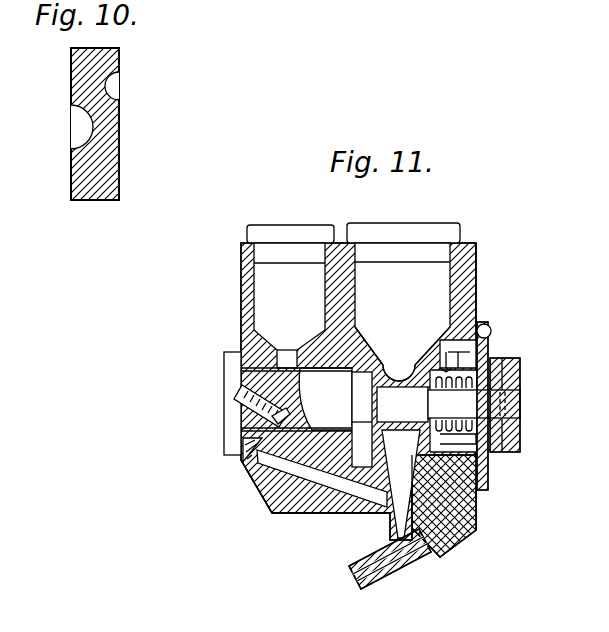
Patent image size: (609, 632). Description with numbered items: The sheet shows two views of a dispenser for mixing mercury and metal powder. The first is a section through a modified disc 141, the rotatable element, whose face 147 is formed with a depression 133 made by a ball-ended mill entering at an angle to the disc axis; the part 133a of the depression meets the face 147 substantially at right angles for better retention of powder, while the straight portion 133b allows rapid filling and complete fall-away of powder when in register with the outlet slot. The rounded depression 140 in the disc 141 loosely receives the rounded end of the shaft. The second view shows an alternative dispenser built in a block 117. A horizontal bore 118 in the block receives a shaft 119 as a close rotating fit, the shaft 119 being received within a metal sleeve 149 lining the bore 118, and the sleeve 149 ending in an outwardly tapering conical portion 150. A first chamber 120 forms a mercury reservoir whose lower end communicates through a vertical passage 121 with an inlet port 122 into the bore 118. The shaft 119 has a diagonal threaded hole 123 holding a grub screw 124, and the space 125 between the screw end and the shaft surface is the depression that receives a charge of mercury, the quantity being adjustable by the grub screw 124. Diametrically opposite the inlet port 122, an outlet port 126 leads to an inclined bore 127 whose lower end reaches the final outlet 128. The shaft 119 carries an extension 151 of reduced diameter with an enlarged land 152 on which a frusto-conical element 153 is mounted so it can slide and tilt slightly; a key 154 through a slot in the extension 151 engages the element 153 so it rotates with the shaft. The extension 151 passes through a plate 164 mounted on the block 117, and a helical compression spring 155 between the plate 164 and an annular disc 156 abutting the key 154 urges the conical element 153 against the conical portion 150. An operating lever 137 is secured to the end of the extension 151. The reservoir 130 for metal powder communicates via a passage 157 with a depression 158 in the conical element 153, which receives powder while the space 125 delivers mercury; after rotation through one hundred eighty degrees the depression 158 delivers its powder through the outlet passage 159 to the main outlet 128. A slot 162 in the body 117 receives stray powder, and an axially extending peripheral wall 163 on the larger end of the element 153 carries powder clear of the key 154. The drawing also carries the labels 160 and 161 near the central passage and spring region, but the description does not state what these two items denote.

In FIG. 10, the straight portion of the depression 133b is at (117, 70).
In FIG. 10, the depression 133 is at (113, 86).
In FIG. 10, the part of the depression 133a is at (117, 97).
In FIG. 10, the rounded depression 140 is at (77, 127).
In FIG. 10, the face of the disc 147 is at (120, 143).
In FIG. 10, the disc 141 is at (83, 177).
In FIG. 11, the first chamber 120 is at (287, 267).
In FIG. 11, the reservoir for metal powder 130 is at (417, 270).
In FIG. 11, the inlet port 122 is at (285, 340).
In FIG. 11, the vertical passage 121 is at (288, 364).
In FIG. 11, the horizontal bore 118 is at (357, 368).
In FIG. 11, the metal sleeve 149 is at (381, 370).
In FIG. 11, the depression 158 is at (402, 362).
In FIG. 11, the passage 160 is at (358, 410).
In FIG. 11, the land 152 is at (410, 419).
In FIG. 11, the spring 161 is at (445, 433).
In FIG. 11, the plate 164 is at (487, 460).
In FIG. 11, the extension 151 is at (515, 397).
In FIG. 11, the helical compression spring 155 is at (520, 435).
In FIG. 11, the operating lever 137 is at (520, 415).
In FIG. 11, the passage 157 is at (477, 280).
In FIG. 11, the axially extending peripheral wall 163 is at (460, 337).
In FIG. 11, the key 154 is at (457, 360).
In FIG. 11, the annular disc 156 is at (448, 372).
In FIG. 11, the space 125 is at (243, 430).
In FIG. 11, the shaft 119 is at (243, 460).
In FIG. 11, the threaded hole 123 is at (245, 393).
In FIG. 11, the grub screw 124 is at (233, 407).
In FIG. 11, the outlet port 126 is at (285, 455).
In FIG. 11, the slot 162 is at (353, 445).
In FIG. 11, the inclined bore 127 is at (367, 512).
In FIG. 11, the frusto-conical element 153 is at (473, 497).
In FIG. 11, the outlet passage 159 is at (463, 527).
In FIG. 11, the conical portion 150 is at (450, 547).
In FIG. 11, the final outlet 128 is at (413, 540).
In FIG. 11, the block 117 is at (295, 519).